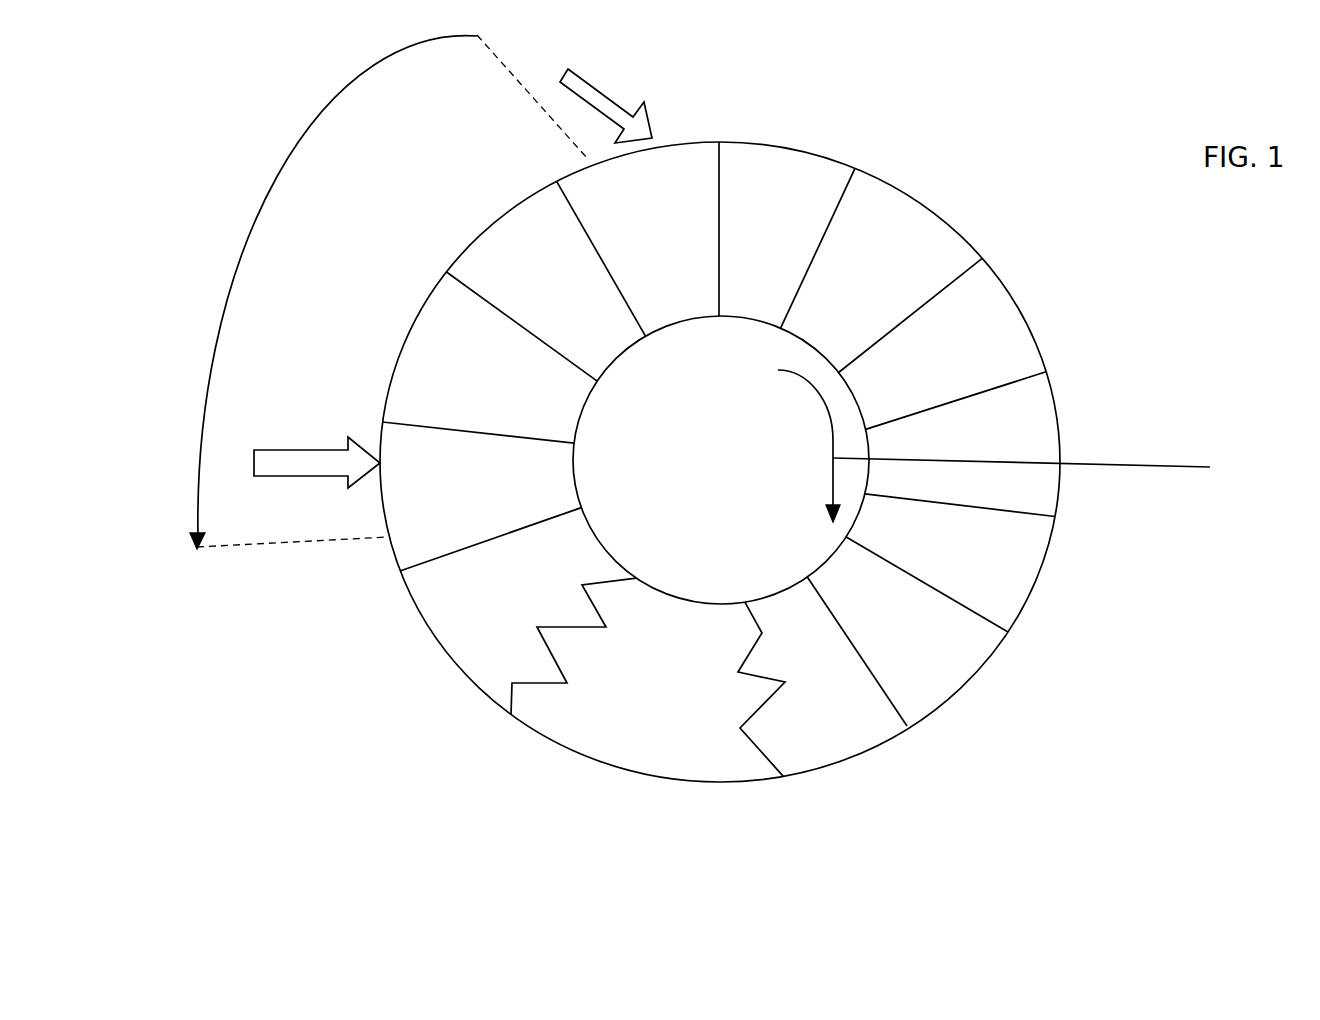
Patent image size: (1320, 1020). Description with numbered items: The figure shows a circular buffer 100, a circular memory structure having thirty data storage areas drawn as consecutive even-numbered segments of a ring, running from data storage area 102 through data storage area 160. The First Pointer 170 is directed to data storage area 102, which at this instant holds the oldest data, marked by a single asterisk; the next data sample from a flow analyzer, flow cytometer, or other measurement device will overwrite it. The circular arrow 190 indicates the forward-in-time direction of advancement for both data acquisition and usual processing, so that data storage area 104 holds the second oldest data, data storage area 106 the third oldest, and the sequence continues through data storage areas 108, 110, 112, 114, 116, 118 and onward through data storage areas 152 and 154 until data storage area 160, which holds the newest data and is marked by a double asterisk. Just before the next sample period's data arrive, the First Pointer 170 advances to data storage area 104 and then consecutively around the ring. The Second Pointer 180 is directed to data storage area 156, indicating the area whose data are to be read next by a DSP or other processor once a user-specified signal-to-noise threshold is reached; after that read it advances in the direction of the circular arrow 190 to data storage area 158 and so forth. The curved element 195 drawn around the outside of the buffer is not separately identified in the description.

The circular buffer 100 is at (1095, 339).
The data storage area 102 is at (647, 225).
The data storage area 104 is at (792, 172).
The data storage area 106 is at (888, 263).
The data storage area 108 is at (975, 338).
The data storage area 110 is at (998, 443).
The data storage area 112 is at (992, 547).
The data storage area 114 is at (945, 642).
The data storage area 116 is at (827, 717).
The data storage area 118 is at (637, 742).
The data storage area 152 is at (528, 724).
The data storage area 154 is at (508, 603).
The data storage area 156 is at (447, 527).
The data storage area 158 is at (493, 368).
The data storage area 160 is at (532, 253).
The First Pointer 170 is at (610, 100).
The Second Pointer 180 is at (288, 463).
The circular arrow 190 is at (1043, 472).
The return path of samples 195 is at (293, 153).